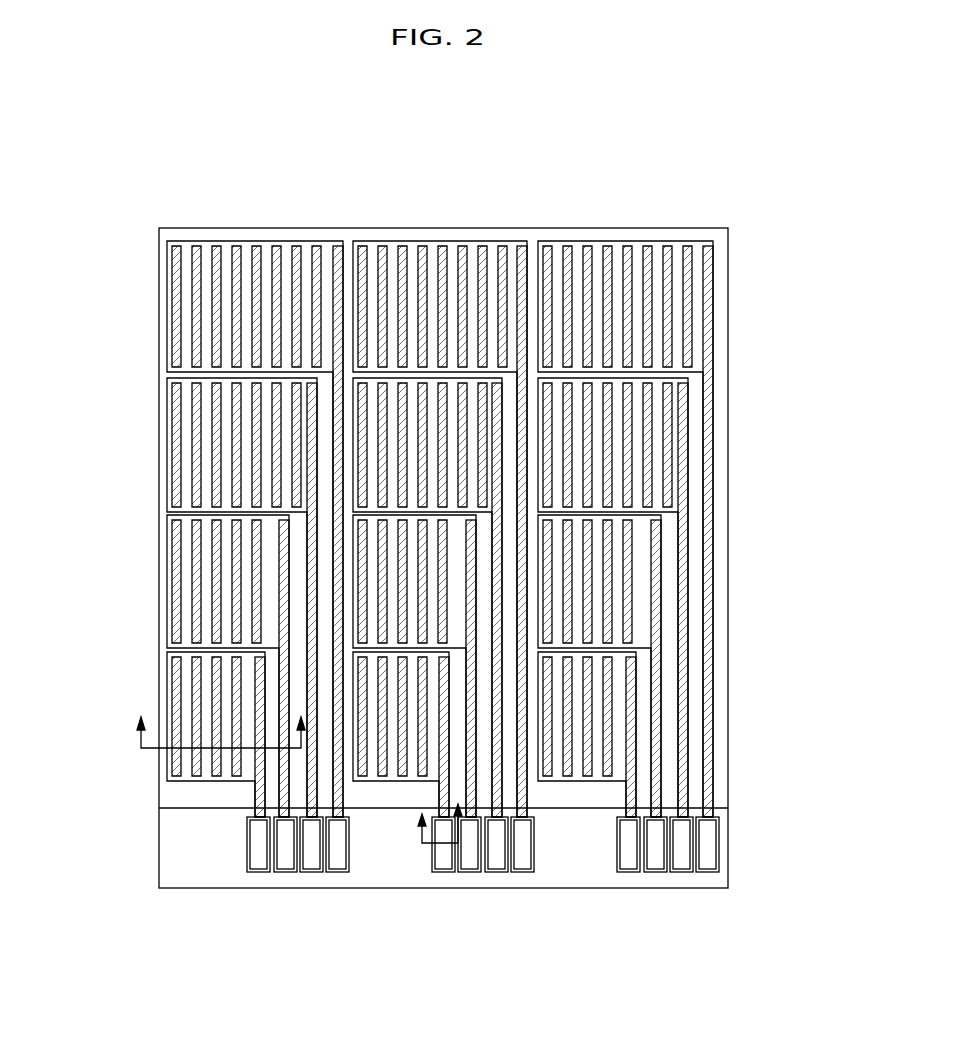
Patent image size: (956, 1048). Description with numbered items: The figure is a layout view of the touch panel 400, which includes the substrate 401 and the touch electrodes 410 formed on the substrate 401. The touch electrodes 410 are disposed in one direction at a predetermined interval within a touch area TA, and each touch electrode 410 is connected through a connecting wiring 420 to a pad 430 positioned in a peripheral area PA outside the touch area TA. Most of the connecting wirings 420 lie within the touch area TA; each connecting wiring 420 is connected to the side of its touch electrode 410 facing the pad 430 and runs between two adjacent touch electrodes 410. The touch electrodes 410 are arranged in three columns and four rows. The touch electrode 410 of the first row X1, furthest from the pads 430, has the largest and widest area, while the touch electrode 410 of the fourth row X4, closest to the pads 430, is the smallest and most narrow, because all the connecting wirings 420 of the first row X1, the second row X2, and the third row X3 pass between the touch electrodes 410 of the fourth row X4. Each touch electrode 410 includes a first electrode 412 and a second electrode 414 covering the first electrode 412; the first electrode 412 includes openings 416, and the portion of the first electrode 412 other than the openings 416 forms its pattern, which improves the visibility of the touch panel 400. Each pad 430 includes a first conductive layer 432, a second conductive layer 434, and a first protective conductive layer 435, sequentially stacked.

The touch panel 400 is at (553, 150).
The substrate 401 is at (728, 665).
The touch electrode 410 is at (333, 162).
The first electrode 412 is at (255, 247).
The second electrode 414 is at (298, 246).
The opening 416 is at (207, 232).
The connecting wiring 420 is at (710, 752).
The pad 430 is at (383, 973).
The first conductive layer 432 is at (323, 852).
The second conductive layer 434 is at (308, 873).
The first protective conductive layer 435 is at (320, 873).
The first row X1 is at (160, 298).
The second row X2 is at (160, 434).
The third row X3 is at (160, 577).
The fourth row X4 is at (160, 665).
The touch area TA is at (172, 797).
The peripheral area PA is at (172, 845).